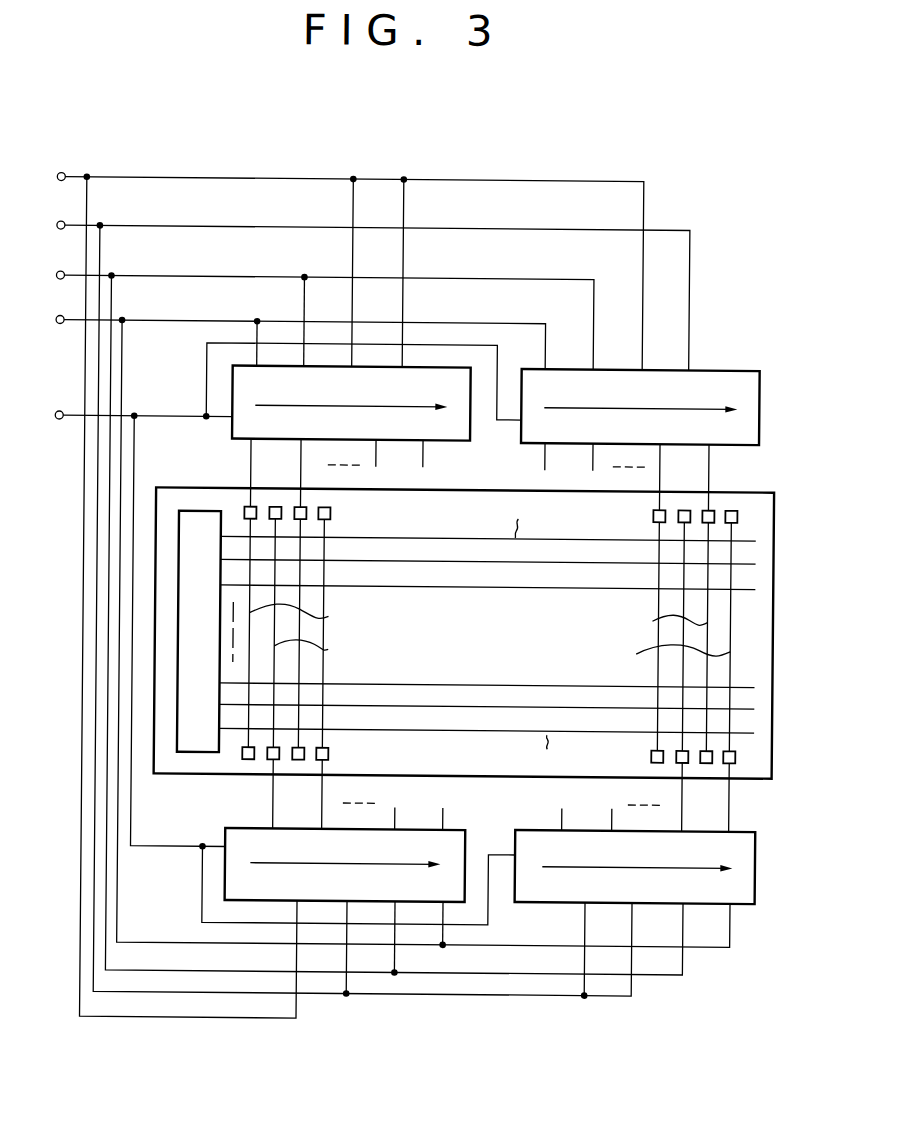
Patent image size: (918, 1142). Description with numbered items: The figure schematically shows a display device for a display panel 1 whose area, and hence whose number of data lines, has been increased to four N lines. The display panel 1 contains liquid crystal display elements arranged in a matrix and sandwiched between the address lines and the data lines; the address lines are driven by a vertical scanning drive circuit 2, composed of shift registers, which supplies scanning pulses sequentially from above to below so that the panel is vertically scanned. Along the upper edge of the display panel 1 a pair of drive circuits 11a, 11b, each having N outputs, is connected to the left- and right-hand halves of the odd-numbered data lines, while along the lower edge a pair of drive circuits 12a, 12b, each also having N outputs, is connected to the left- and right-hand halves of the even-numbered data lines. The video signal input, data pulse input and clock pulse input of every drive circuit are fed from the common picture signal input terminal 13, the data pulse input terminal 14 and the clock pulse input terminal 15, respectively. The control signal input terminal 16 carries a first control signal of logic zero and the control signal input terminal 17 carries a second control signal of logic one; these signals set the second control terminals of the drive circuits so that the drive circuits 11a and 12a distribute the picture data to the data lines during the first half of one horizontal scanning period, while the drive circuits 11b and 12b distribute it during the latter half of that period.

The display panel 1 is at (765, 490).
The vertical scanning drive circuit 2 is at (196, 511).
The drive circuit 11a is at (452, 445).
The drive circuit 11b is at (745, 446).
The drive circuit 12a is at (466, 829).
The drive circuit 12b is at (752, 829).
The common picture signal input terminal 13 is at (58, 422).
The data pulse input terminal 14 is at (58, 326).
The clock pulse input terminal 15 is at (58, 282).
The control signal input terminal 16 is at (58, 184).
The control signal input terminal 17 is at (58, 232).